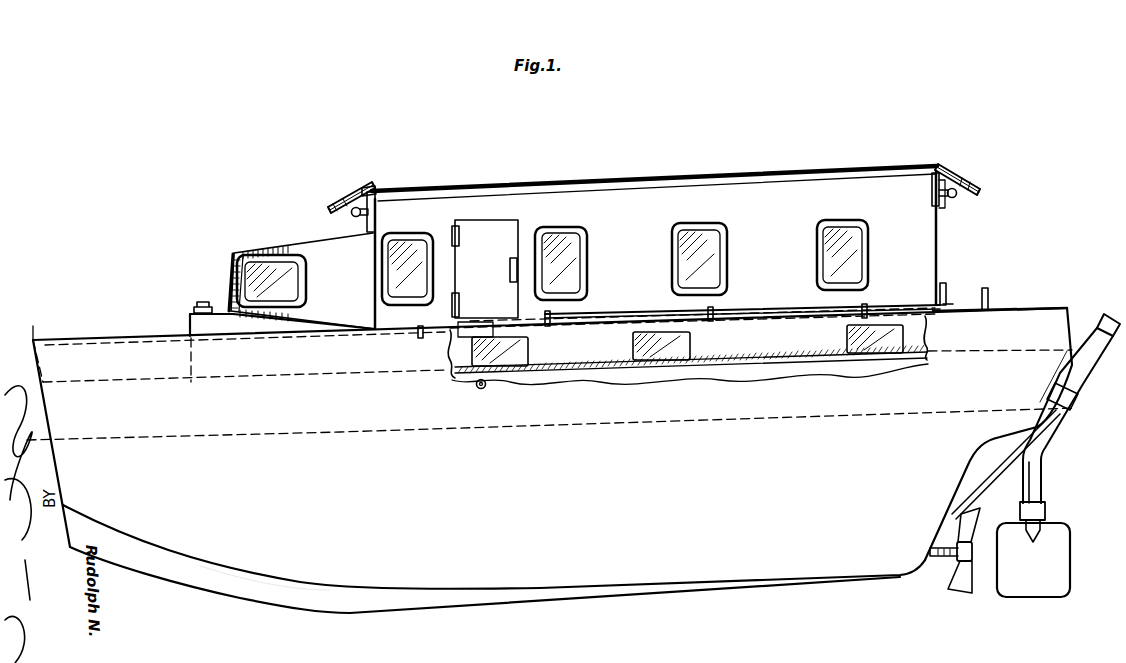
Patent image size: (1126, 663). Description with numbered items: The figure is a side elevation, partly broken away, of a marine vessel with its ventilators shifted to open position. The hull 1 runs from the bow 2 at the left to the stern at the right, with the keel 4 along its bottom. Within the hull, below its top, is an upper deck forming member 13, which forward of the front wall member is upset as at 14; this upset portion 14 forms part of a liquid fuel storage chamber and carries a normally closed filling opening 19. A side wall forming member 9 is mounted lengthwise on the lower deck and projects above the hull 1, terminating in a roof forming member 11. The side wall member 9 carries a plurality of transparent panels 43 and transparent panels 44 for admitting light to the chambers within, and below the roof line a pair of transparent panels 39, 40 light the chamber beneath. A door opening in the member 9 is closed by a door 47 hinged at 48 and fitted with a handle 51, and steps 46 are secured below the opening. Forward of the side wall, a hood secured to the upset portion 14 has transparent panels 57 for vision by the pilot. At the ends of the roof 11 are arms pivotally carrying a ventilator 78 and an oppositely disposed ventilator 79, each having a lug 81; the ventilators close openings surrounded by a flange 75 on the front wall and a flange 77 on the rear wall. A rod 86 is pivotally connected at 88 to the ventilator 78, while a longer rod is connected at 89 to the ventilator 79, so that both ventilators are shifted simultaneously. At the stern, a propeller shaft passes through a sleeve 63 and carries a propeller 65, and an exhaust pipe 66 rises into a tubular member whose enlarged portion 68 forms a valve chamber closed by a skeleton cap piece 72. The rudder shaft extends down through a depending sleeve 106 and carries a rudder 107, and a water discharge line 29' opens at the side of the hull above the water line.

The hull 1 is at (544, 553).
The bow 2 is at (29, 321).
The keel 4 is at (285, 595).
The side wall forming member 9 is at (738, 200).
The roof forming member 11 is at (665, 190).
The upper deck forming member 13 is at (771, 362).
The upset portion 14 is at (190, 318).
The filling opening 19 is at (204, 300).
The water discharge line 29' is at (457, 392).
The transparent panel 39 is at (664, 352).
The transparent panel 40 is at (888, 340).
The transparent panels 43 is at (405, 262).
The transparent panels 44 is at (840, 255).
The steps 46 is at (452, 338).
The door 47 is at (497, 232).
The hinge 48 is at (455, 232).
The handle 51 is at (512, 262).
The transparent panels 57 is at (231, 288).
The sleeve 63 is at (940, 552).
The propeller 65 is at (960, 590).
The exhaust pipe 66 is at (1000, 470).
The enlarged portion 68 is at (1080, 350).
The cap piece 72 is at (1110, 322).
The flange 75 is at (373, 188).
The flange 77 is at (932, 187).
The ventilator 78 is at (352, 195).
The ventilator 79 is at (964, 182).
The lug 81 is at (946, 208).
The rod 86 is at (368, 226).
The pivotal connection 88 is at (352, 213).
The pivotal connection 89 is at (956, 198).
The depending sleeve 106 is at (1042, 465).
The rudder 107 is at (1050, 532).